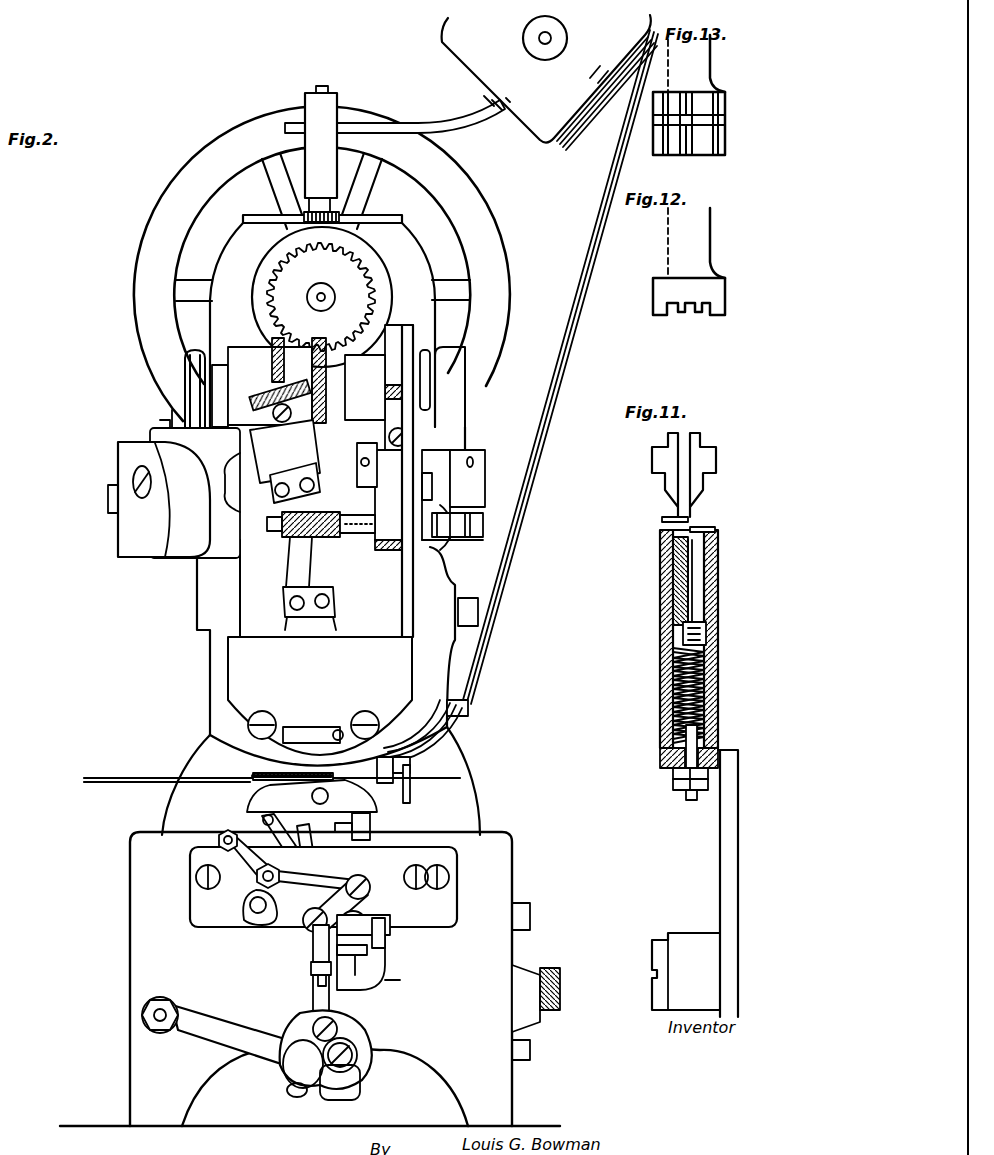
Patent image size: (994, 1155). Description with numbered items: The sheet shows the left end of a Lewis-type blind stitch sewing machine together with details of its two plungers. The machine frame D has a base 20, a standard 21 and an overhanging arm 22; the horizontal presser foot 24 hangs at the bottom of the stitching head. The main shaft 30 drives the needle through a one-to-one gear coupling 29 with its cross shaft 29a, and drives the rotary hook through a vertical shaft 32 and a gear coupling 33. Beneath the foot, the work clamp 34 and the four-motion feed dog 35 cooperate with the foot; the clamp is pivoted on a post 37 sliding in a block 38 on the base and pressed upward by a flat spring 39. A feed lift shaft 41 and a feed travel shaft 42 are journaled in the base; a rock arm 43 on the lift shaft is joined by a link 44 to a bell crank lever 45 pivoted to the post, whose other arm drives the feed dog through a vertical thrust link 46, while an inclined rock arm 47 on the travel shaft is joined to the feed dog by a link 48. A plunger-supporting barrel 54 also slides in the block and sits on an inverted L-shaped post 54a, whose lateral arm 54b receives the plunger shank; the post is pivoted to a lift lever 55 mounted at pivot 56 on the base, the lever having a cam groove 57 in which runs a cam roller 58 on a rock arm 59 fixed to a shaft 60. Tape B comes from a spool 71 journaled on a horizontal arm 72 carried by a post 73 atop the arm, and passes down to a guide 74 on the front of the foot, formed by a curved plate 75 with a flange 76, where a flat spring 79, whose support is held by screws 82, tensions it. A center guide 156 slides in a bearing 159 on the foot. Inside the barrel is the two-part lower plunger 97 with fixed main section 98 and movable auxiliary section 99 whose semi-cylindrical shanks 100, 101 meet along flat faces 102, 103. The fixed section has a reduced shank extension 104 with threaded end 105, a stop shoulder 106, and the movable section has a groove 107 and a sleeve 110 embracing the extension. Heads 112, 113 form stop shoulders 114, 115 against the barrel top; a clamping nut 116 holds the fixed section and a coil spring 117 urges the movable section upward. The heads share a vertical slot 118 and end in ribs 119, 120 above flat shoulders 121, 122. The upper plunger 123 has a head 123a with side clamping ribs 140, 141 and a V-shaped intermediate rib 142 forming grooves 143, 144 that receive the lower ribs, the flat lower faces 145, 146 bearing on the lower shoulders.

In FIG. 2, the base 20 is at (510, 848).
In FIG. 2, the standard 21 is at (428, 262).
In FIG. 2, the overhanging arm 22 is at (365, 262).
In FIG. 2, the presser foot 24 is at (265, 778).
In FIG. 2, the gear coupling 29 is at (385, 332).
In FIG. 2, the cross shaft 29a is at (333, 388).
In FIG. 2, the main shaft 30 is at (326, 286).
In FIG. 2, the vertical shaft 32 is at (313, 586).
In FIG. 2, the gear coupling 33 is at (270, 378).
In FIG. 2, the work clamp 34 is at (195, 785).
In FIG. 2, the feed dog 35 is at (265, 802).
In FIG. 2, the post 37 is at (372, 822).
In FIG. 2, the block 38 is at (448, 915).
In FIG. 2, the flat spring 39 is at (400, 955).
In FIG. 2, the feed lift shaft 41 is at (250, 905).
In FIG. 2, the feed travel shaft 42 is at (215, 863).
In FIG. 2, the rock arm 43 is at (204, 895).
In FIG. 2, the link 44 is at (322, 876).
In FIG. 2, the bell crank lever 45 is at (357, 893).
In FIG. 2, the vertical thrust link 46 is at (314, 869).
In FIG. 2, the inclined rock arm 47 is at (250, 852).
In FIG. 2, the link 48 is at (262, 822).
In FIG. 2, the plunger-supporting barrel 54 is at (312, 940).
In FIG. 11, the plunger-supporting barrel 54 is at (720, 586).
In FIG. 2, the inverted L-shaped post 54a is at (318, 1010).
In FIG. 11, the inverted L-shaped post 54a is at (718, 848).
In FIG. 2, the lateral arm 54b is at (313, 970).
In FIG. 11, the lateral arm 54b is at (660, 760).
In FIG. 2, the lift lever 55 is at (200, 1026).
In FIG. 11, the lift lever 55 is at (686, 934).
In FIG. 2, the pivot 56 is at (164, 1008).
In FIG. 2, the cam groove 57 is at (357, 1047).
In FIG. 2, the cam roller 58 is at (350, 1030).
In FIG. 2, the rock arm 59 is at (295, 1062).
In FIG. 2, the shaft 60 is at (290, 1090).
In FIG. 2, the spool 71 is at (522, 42).
In FIG. 2, the horizontal arm 72 is at (440, 126).
In FIG. 2, the post 73 is at (332, 116).
In FIG. 2, the guide 74 is at (440, 752).
In FIG. 2, the curved plate 75 is at (446, 742).
In FIG. 2, the flange 76 is at (466, 708).
In FIG. 2, the flat spring 79 is at (405, 740).
In FIG. 2, the screws 82 is at (468, 720).
In FIG. 11, the lower plunger 97 is at (694, 582).
In FIG. 11, the main section 98 is at (706, 560).
In FIG. 11, the auxiliary section 99 is at (678, 541).
In FIG. 11, the semi-cylindrical shank 100 is at (712, 608).
In FIG. 11, the semi-cylindrical shank 101 is at (665, 520).
In FIG. 11, the flat abutting face 102 is at (710, 534).
In FIG. 11, the flat abutting face 103 is at (686, 560).
In FIG. 11, the reduced shank extension 104 is at (712, 748).
In FIG. 2, the threaded lower end 105 is at (320, 985).
In FIG. 11, the threaded lower end 105 is at (690, 801).
In FIG. 11, the stop shoulder 106 is at (683, 632).
In FIG. 11, the groove 107 is at (694, 627).
In FIG. 11, the sleeve 110 is at (706, 636).
In FIG. 11, the head 112 is at (708, 497).
In FIG. 11, the head 113 is at (665, 478).
In FIG. 11, the stop shoulder 114 is at (707, 522).
In FIG. 11, the stop shoulder 115 is at (671, 500).
In FIG. 11, the clamping nut 116 is at (673, 778).
In FIG. 11, the coil spring 117 is at (660, 672).
In FIG. 11, the vertical slot 118 is at (703, 440).
In FIG. 11, the ridge forming rib 119 is at (704, 449).
In FIG. 11, the ridge forming rib 120 is at (665, 440).
In FIG. 11, the flat horizontal shoulder 121 is at (716, 462).
In FIG. 11, the flat horizontal shoulder 122 is at (655, 448).
In FIG. 13, the upper plunger 123 is at (704, 72).
In FIG. 12, the upper plunger 123 is at (707, 269).
In FIG. 13, the head 123a is at (733, 145).
In FIG. 12, the head 123a is at (722, 284).
In FIG. 13, the side clamping rib 140 is at (660, 125).
In FIG. 12, the side clamping rib 140 is at (722, 300).
In FIG. 13, the side clamping rib 141 is at (718, 100).
In FIG. 12, the side clamping rib 141 is at (653, 312).
In FIG. 13, the intermediate ridge forming rib 142 is at (680, 130).
In FIG. 12, the intermediate ridge forming rib 142 is at (690, 326).
In FIG. 12, the groove 143 is at (706, 320).
In FIG. 12, the groove 144 is at (675, 322).
In FIG. 13, the lower face 145 is at (710, 123).
In FIG. 12, the lower face 145 is at (718, 318).
In FIG. 12, the lower face 146 is at (656, 326).
In FIG. 2, the center guide 156 is at (412, 793).
In FIG. 2, the bearing 159 is at (412, 776).
In FIG. 2, the tape B is at (548, 412).
In FIG. 2, the frame D is at (190, 682).